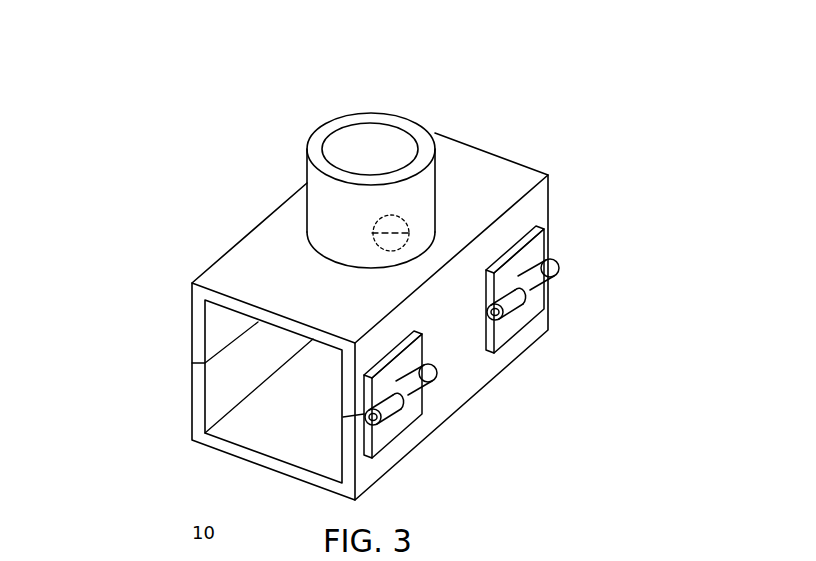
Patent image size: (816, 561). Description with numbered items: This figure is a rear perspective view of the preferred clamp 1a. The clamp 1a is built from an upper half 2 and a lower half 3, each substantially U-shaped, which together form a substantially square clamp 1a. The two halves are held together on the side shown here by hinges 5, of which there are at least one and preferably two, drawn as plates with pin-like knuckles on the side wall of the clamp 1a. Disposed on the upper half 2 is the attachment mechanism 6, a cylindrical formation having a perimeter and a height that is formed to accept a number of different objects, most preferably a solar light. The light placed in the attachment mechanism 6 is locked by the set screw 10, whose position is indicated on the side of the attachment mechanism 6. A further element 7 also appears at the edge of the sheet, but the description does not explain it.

The upper half 2 is at (473, 189).
The clamp 1a is at (302, 278).
The lower half 3 is at (267, 428).
The attachment mechanism 6 is at (320, 136).
The set screw 10 is at (377, 233).
The hinges 5 is at (383, 393).
The element 7 is at (647, 560).